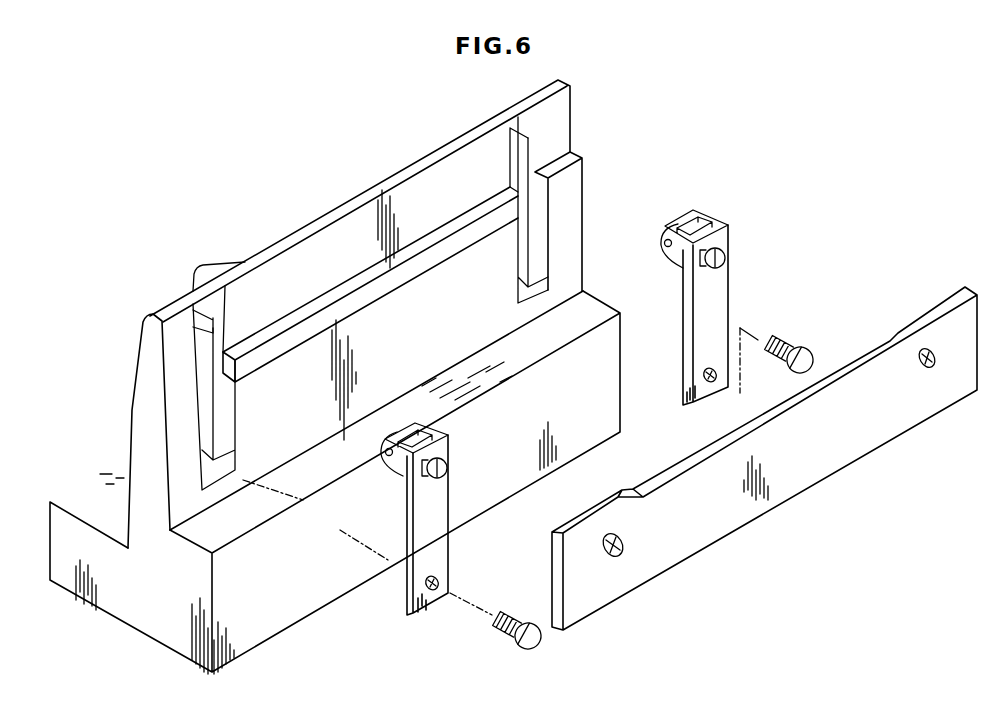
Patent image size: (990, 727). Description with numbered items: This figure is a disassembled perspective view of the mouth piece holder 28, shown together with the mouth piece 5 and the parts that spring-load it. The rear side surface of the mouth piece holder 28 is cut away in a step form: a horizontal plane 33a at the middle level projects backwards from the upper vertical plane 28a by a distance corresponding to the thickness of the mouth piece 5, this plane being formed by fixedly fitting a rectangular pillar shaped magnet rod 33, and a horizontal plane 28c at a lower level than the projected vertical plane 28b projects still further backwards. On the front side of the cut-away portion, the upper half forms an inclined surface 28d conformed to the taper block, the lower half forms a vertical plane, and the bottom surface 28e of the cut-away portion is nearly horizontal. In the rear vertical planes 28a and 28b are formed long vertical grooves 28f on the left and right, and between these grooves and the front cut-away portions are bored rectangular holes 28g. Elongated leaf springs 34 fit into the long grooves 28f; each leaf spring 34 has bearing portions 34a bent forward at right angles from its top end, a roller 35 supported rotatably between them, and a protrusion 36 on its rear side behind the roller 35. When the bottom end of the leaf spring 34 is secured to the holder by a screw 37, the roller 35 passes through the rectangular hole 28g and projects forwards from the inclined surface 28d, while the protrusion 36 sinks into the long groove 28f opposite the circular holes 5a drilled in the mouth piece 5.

The mouth piece 5 is at (775, 486).
The circular holes 5a is at (932, 368).
The mouth piece holder 28 is at (368, 194).
The upper vertical plane 28a is at (417, 203).
The projected vertical plane 28b is at (480, 333).
The horizontal plane 28c is at (592, 307).
The inclined surface 28d is at (134, 380).
The bottom surface 28e is at (78, 496).
The long vertical grooves 28f is at (546, 226).
The rectangular holes 28g is at (524, 135).
The magnet rod 33 is at (415, 268).
The horizontal plane 33a is at (352, 288).
The leaf spring 34 is at (720, 292).
The bearing portions 34a is at (708, 218).
The roller 35 is at (676, 222).
The protrusion 36 is at (727, 256).
The screw 37 is at (800, 347).